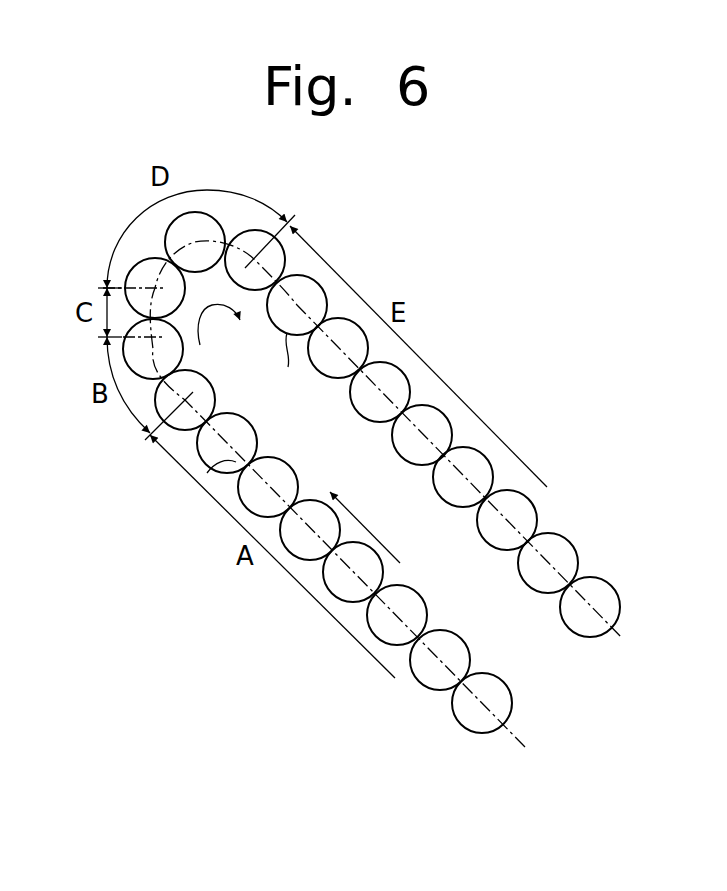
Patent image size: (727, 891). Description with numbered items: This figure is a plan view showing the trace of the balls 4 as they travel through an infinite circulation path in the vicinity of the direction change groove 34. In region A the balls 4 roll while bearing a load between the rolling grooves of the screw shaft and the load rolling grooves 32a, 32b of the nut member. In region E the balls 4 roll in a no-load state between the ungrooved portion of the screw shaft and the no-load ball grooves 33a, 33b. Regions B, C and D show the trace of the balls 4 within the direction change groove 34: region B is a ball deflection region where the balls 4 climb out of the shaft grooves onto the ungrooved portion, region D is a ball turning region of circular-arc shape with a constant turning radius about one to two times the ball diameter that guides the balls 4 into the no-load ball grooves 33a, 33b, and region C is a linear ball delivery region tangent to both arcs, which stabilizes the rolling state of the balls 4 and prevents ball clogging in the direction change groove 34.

The balls 4 is at (211, 395).
The direction change groove 34 is at (140, 267).
The no-load ball groove 33a is at (461, 372).
The no-load ball groove 33b is at (392, 392).
The load rolling groove 32a is at (144, 497).
The load rolling groove 32b is at (214, 464).